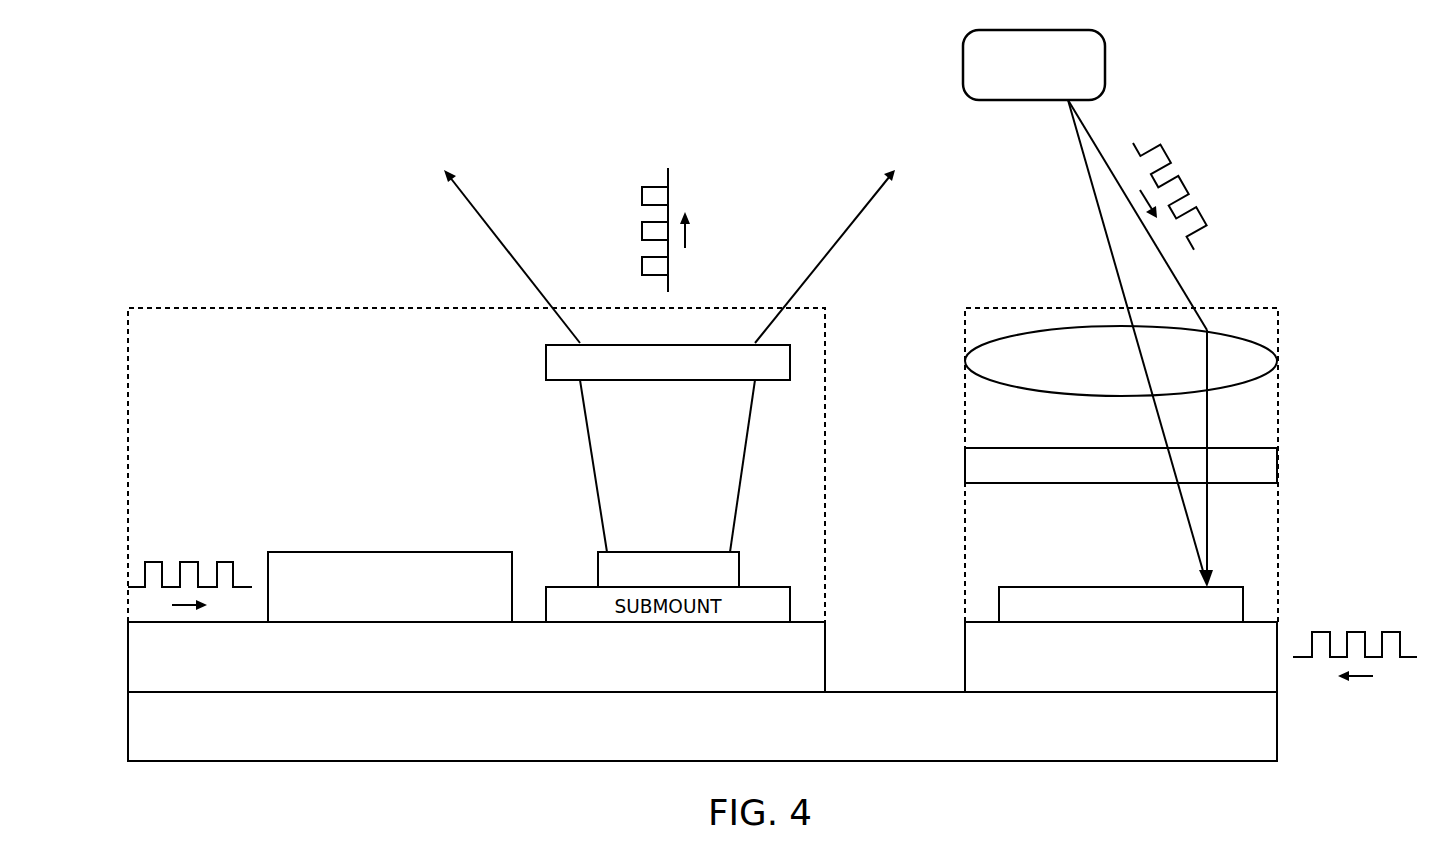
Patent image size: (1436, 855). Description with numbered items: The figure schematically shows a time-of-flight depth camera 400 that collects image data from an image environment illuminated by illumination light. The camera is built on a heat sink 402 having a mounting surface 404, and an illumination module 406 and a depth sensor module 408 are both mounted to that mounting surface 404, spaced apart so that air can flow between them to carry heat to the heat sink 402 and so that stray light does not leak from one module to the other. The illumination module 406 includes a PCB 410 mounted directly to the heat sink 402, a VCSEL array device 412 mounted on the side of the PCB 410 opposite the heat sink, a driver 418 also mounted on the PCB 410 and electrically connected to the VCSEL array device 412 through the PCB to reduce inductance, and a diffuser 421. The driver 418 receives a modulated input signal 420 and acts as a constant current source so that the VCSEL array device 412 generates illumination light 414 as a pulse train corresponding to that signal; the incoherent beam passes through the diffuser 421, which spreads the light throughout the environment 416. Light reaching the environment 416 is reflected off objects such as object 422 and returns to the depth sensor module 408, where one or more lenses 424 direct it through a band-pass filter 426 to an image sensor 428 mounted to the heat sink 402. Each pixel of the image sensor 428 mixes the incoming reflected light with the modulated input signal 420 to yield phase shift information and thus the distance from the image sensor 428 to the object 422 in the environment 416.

The time-of-flight depth camera 400 is at (213, 60).
The heat sink 402 is at (740, 737).
The mounting surface 404 is at (928, 692).
The illumination module 406 is at (216, 308).
The depth sensor module 408 is at (1052, 308).
The PCB 410 is at (483, 668).
The VCSEL array device 412 is at (752, 566).
The illumination light 414 is at (597, 483).
The environment 416 is at (713, 58).
The driver 418 is at (411, 599).
The modulated input signal 420 is at (153, 562).
The diffuser 421 is at (702, 373).
The object 422 is at (1018, 74).
The lenses 424 is at (1130, 397).
The band-pass filter 426 is at (1048, 448).
The image sensor 428 is at (1085, 587).